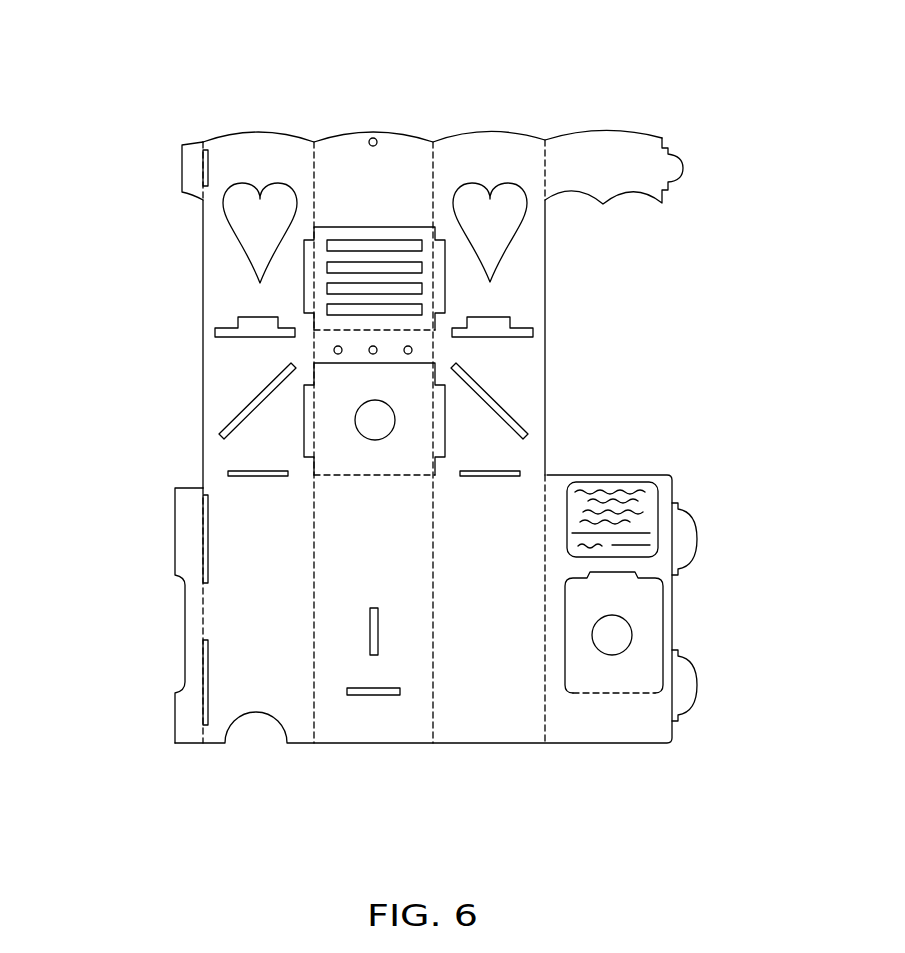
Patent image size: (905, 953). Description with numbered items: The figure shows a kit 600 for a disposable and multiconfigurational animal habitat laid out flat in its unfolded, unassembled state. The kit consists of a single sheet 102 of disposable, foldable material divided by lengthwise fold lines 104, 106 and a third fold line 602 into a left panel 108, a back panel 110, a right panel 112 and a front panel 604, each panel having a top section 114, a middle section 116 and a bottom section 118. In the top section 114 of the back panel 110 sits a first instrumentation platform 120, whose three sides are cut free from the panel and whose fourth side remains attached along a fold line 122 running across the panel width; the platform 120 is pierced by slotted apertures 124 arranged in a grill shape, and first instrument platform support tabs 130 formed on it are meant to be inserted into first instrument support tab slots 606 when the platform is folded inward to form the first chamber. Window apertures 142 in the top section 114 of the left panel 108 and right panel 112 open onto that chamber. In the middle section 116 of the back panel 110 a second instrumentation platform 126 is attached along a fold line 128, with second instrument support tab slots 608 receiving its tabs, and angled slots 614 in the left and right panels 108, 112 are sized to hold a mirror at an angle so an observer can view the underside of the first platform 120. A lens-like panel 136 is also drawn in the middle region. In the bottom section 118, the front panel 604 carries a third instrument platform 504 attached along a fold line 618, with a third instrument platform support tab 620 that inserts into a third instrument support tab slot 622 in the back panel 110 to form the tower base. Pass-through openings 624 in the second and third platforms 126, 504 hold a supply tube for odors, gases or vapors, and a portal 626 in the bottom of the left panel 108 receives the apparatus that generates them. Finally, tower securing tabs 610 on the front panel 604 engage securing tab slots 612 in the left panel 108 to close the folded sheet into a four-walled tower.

The kit 600 is at (170, 92).
The sheet 102 is at (617, 118).
The fold line 104 is at (313, 154).
The fold line 106 is at (432, 152).
The third fold line 602 is at (544, 152).
The tower securing tab 610 is at (684, 160).
The securing tab slot 612 is at (204, 166).
The window aperture 142 is at (236, 215).
The top section 114 is at (182, 253).
The first instrument platform support tab 130 is at (304, 282).
The first instrumentation platform 120 is at (418, 240).
The slotted aperture 124 is at (430, 266).
The first instrument support tab slot 606 is at (216, 333).
The fold line 122 is at (345, 330).
The middle section 116 is at (180, 428).
The angled slot 614 is at (232, 422).
The lens panel 136 is at (304, 420).
The second instrumentation platform 126 is at (415, 461).
The pass-through opening 624 is at (382, 430).
The fold line 128 is at (342, 478).
The second instrument support tab slot 608 is at (230, 474).
The bottom section 118 is at (168, 640).
The left panel 108 is at (217, 708).
The portal 626 is at (273, 729).
The back panel 110 is at (341, 725).
The third instrument support tab slot 622 is at (378, 700).
The right panel 112 is at (469, 725).
The front panel 604 is at (625, 724).
The third instrument platform support tab 620 is at (602, 573).
The third instrument platform 504 is at (652, 645).
The fold line 618 is at (627, 696).